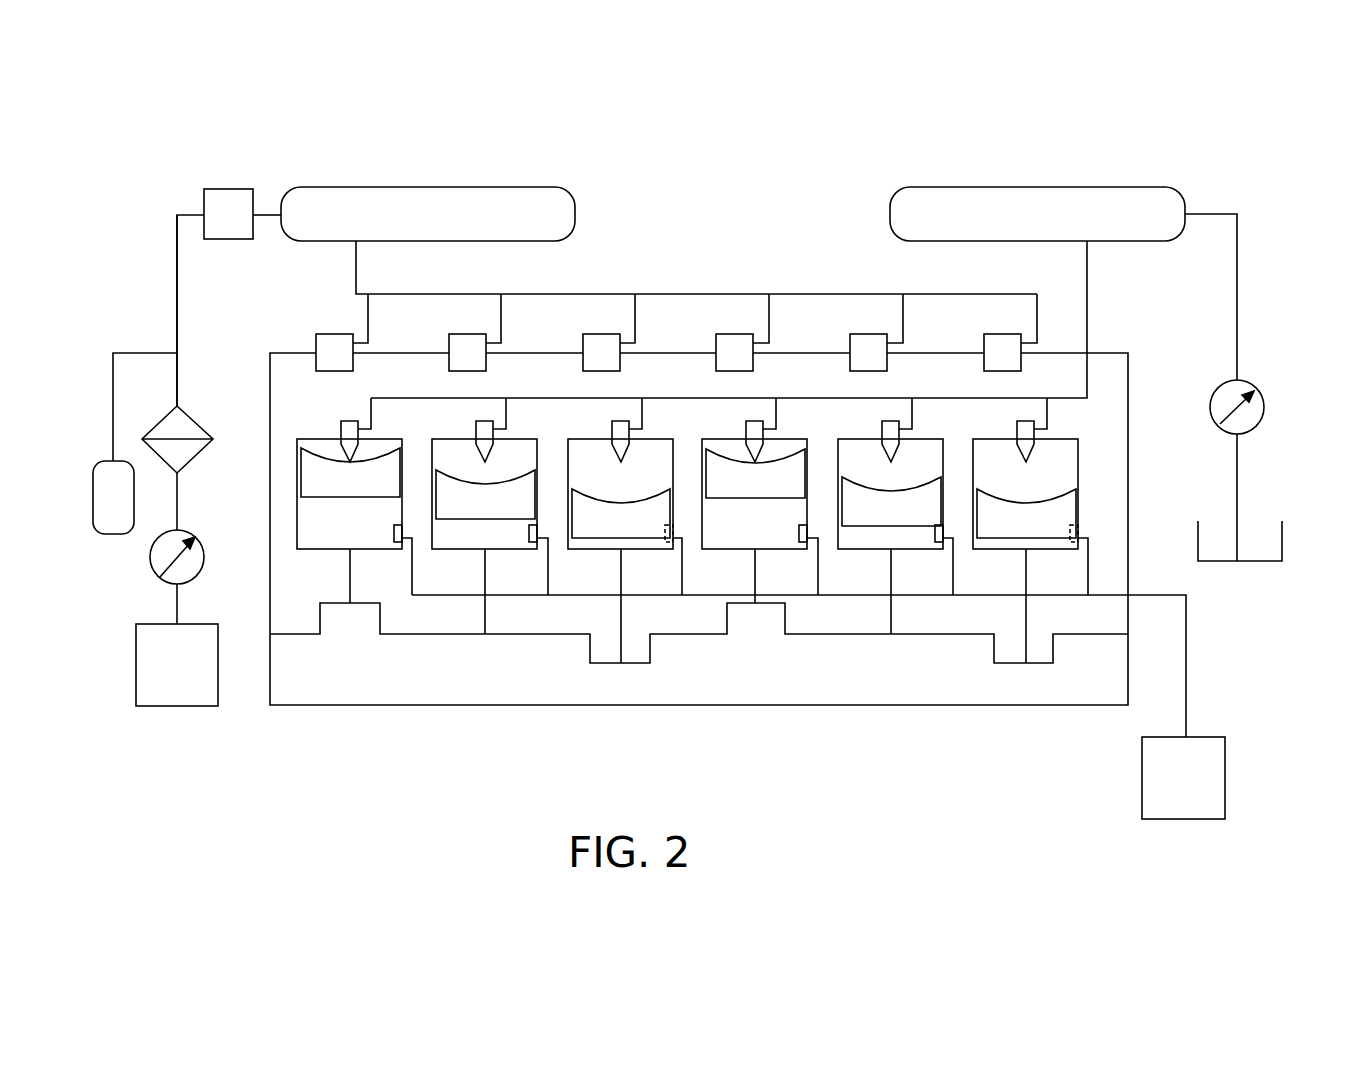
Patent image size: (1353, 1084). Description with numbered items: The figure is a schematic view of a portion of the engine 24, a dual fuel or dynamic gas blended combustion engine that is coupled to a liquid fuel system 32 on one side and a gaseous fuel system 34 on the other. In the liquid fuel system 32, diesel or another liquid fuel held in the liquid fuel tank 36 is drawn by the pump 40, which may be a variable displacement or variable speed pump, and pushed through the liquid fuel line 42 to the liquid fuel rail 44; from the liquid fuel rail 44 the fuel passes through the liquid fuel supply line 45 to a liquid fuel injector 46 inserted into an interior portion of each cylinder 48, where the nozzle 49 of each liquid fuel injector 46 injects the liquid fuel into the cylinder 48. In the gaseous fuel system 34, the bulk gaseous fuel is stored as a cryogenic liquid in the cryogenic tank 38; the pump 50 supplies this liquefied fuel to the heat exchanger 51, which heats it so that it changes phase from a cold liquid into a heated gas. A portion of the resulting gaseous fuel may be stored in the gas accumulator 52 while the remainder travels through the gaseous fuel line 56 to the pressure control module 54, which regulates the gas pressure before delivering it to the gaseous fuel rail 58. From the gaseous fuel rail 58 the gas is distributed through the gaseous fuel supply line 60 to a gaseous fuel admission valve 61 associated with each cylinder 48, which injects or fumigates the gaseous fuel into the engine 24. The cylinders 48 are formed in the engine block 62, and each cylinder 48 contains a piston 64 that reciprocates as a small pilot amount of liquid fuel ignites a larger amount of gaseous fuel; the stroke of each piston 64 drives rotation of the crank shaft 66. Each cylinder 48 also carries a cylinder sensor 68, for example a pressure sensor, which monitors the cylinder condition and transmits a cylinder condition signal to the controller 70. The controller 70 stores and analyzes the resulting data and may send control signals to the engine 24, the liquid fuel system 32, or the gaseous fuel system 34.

The engine 24 is at (850, 760).
The liquid fuel system 32 is at (1248, 245).
The gaseous fuel system 34 is at (150, 248).
The liquid fuel tank 36 is at (1282, 540).
The cryogenic tank 38 is at (150, 624).
The pump 40 is at (1264, 410).
The liquid fuel line 42 is at (1237, 312).
The liquid fuel rail 44 is at (1038, 187).
The liquid fuel supply line 45 is at (1087, 298).
The liquid fuel injector 46 is at (341, 429).
The cylinder 48 is at (1062, 463).
The nozzle 49 is at (353, 461).
The pump 50 is at (204, 556).
The heat exchanger 51 is at (196, 422).
The gas accumulator 52 is at (98, 461).
The pressure control module 54 is at (228, 189).
The gaseous fuel line 56 is at (177, 305).
The gaseous fuel rail 58 is at (430, 187).
The gaseous fuel supply line 60 is at (356, 268).
The gaseous fuel admission valve 61 is at (316, 345).
The engine block 62 is at (1115, 488).
The piston 64 is at (328, 498).
The crank shaft 66 is at (525, 688).
The cylinder sensor 68 is at (398, 545).
The controller 70 is at (1226, 779).